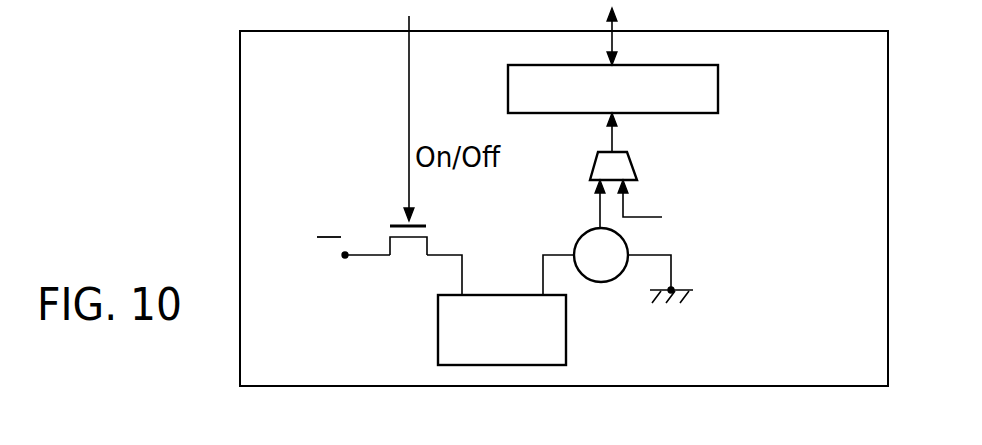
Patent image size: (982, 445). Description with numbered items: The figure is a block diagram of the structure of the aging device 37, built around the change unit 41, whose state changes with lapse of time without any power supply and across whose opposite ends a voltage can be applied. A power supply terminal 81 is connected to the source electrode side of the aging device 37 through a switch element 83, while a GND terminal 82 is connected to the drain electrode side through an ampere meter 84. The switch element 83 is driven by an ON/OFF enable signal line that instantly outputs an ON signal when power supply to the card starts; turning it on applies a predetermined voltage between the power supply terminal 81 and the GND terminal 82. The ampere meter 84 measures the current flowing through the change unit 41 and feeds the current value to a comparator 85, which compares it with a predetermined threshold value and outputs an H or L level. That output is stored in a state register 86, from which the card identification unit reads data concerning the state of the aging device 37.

The aging device 37 is at (240, 118).
The change unit 41 is at (567, 345).
The power supply terminal 81 is at (343, 263).
The GND terminal 82 is at (677, 285).
The switch element 83 is at (398, 221).
The ampere meter 84 is at (622, 237).
The comparator 85 is at (629, 157).
The state register 86 is at (719, 88).